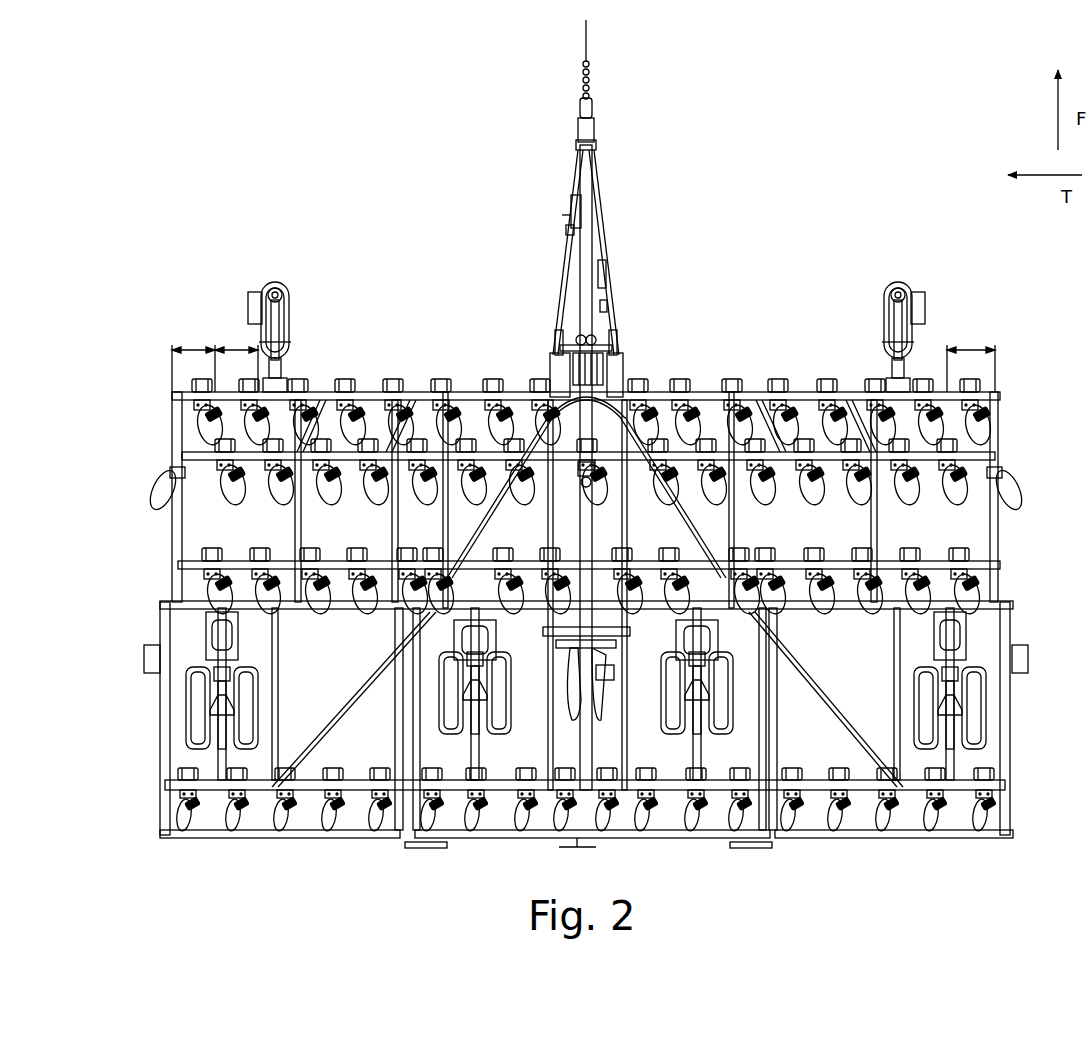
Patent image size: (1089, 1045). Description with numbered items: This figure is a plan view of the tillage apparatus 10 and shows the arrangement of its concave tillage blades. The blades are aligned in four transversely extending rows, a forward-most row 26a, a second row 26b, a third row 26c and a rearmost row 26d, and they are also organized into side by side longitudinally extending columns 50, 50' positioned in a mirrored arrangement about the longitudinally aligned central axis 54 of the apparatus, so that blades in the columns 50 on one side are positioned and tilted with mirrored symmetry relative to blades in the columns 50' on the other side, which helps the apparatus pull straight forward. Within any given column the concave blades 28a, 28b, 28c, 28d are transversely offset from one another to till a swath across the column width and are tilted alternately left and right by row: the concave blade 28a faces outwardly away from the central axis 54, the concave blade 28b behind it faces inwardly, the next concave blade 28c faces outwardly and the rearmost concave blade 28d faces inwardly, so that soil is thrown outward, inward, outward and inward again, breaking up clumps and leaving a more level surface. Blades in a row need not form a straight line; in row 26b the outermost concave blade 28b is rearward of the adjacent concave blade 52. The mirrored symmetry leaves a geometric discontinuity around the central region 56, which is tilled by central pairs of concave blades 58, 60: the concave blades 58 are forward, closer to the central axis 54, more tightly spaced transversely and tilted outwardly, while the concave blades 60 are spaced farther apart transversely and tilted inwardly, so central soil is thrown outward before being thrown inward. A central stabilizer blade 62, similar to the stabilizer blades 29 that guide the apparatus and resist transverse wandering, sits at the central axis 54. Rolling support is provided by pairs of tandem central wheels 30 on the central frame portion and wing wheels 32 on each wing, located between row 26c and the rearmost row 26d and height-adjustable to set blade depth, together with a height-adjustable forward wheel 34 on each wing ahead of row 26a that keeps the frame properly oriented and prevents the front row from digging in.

The tillage apparatus 10 is at (410, 240).
The forward-most row of concave blades 26a is at (185, 410).
The second row of concave blades 26b is at (150, 476).
The third row of concave blades 26c is at (197, 590).
The rearmost row of concave blades 26d is at (160, 803).
The concave blade of the first row 28a is at (197, 430).
The concave blade of the second row 28b is at (163, 500).
The concave blade of the third row 28c is at (213, 593).
The concave blade of the fourth row 28d is at (187, 803).
The stabilizer blade 29 is at (150, 668).
The central wheels 30 is at (746, 692).
The wing wheels 32 is at (968, 706).
The forward wheel 34 is at (285, 316).
The column of concave blades 50 is at (215, 359).
The mirrored column of concave blades 50' is at (971, 359).
The adjacent concave blade 52 is at (193, 488).
The central axis 54 is at (584, 52).
The central region 56 is at (645, 327).
The forward central pair of concave blades 58 is at (573, 672).
The rearward central pair of concave blades 60 is at (561, 800).
The central stabilizer blade 62 is at (595, 476).